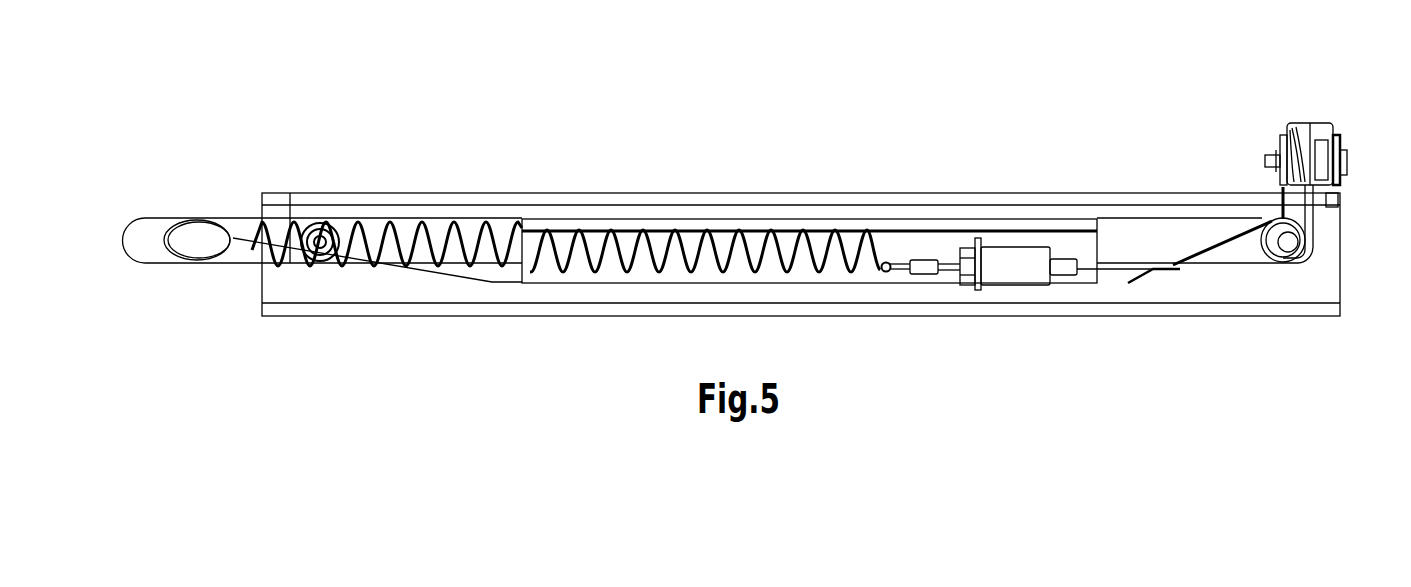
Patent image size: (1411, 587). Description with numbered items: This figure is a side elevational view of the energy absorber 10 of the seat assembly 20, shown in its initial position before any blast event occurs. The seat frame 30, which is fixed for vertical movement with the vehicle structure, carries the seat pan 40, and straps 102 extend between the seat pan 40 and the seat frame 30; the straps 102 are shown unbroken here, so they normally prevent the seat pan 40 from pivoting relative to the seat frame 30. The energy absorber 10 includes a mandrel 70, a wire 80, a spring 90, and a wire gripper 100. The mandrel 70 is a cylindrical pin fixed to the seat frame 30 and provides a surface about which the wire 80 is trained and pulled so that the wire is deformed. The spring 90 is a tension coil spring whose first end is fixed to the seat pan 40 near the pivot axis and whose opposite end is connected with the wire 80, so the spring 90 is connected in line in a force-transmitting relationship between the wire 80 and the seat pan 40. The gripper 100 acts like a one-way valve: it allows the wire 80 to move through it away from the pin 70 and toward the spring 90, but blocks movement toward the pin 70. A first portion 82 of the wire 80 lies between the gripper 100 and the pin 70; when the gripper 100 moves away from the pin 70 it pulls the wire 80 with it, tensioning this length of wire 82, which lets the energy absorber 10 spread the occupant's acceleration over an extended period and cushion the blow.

The energy absorber 10 is at (945, 172).
The seat assembly 20 is at (770, 128).
The seat frame 30 is at (1065, 202).
The seat pan 40 is at (143, 233).
The mandrel 70 is at (1347, 155).
The wire 80 is at (1224, 282).
The first portion of the wire 82 is at (1185, 263).
The spring 90 is at (493, 230).
The wire gripper 100 is at (1013, 272).
The straps 102 is at (1242, 228).